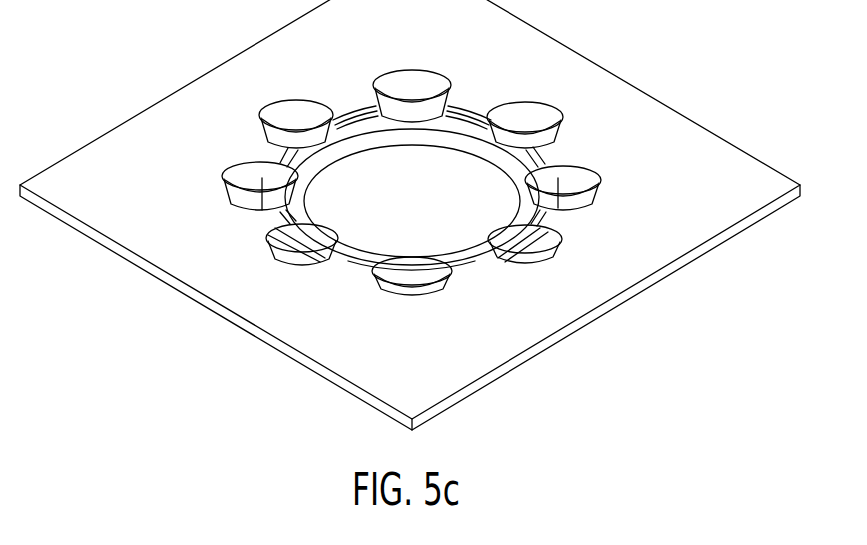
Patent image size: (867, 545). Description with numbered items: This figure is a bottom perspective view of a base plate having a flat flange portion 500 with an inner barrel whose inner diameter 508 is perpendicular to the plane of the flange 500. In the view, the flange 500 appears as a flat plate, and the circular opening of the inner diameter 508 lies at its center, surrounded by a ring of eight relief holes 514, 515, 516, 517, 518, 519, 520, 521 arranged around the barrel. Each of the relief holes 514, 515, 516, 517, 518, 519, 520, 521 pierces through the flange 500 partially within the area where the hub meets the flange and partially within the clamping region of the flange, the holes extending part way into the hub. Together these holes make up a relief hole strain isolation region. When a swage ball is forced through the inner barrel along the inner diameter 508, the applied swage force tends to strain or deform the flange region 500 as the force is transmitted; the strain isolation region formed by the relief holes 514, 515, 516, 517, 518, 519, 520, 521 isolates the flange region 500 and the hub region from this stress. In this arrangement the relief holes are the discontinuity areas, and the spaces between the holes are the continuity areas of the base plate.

The flat flange portion 500 is at (723, 147).
The inner diameter 508 is at (459, 143).
The relief hole 514 is at (290, 100).
The relief hole 515 is at (407, 71).
The relief hole 516 is at (526, 103).
The relief hole 517 is at (601, 181).
The relief hole 518 is at (557, 240).
The relief hole 519 is at (403, 297).
The relief hole 520 is at (270, 249).
The relief hole 521 is at (224, 178).